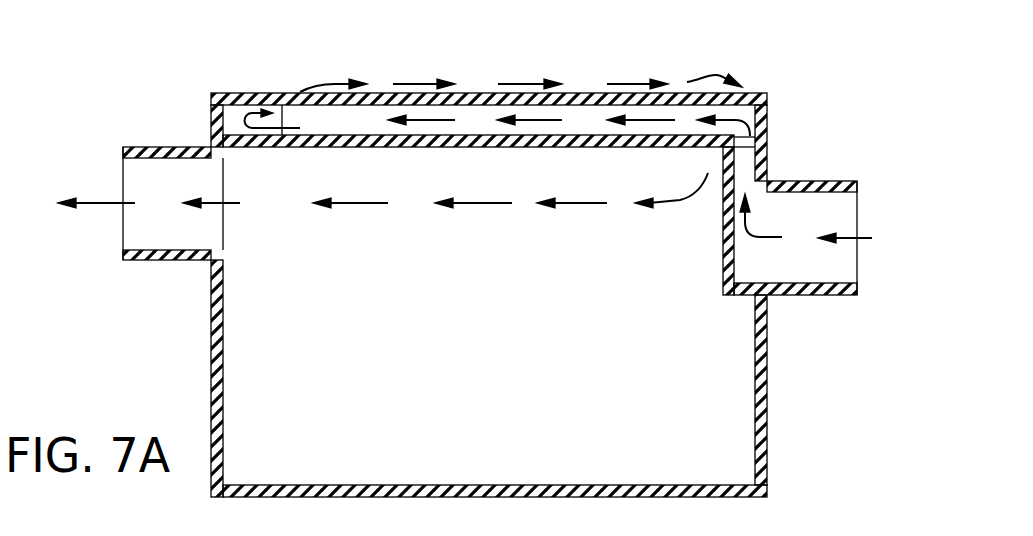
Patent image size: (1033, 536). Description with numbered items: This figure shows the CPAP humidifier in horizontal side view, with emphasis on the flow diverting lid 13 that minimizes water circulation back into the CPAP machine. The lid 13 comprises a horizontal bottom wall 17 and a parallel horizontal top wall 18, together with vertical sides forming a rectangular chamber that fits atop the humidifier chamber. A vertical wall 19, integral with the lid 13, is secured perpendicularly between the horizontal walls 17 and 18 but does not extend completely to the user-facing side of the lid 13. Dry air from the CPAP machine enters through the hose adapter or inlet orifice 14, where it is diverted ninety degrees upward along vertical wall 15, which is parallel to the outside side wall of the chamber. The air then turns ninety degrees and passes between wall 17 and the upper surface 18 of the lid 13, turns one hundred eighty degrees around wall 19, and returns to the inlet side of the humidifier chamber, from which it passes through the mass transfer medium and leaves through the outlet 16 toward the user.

The flow diverting lid 13 is at (766, 63).
The inlet orifice 14 is at (843, 203).
The vertical wall 15 is at (723, 255).
The outlet 16 is at (140, 182).
The horizontal bottom wall 17 is at (425, 148).
The horizontal top wall 18 is at (297, 101).
The vertical wall 19 is at (688, 118).